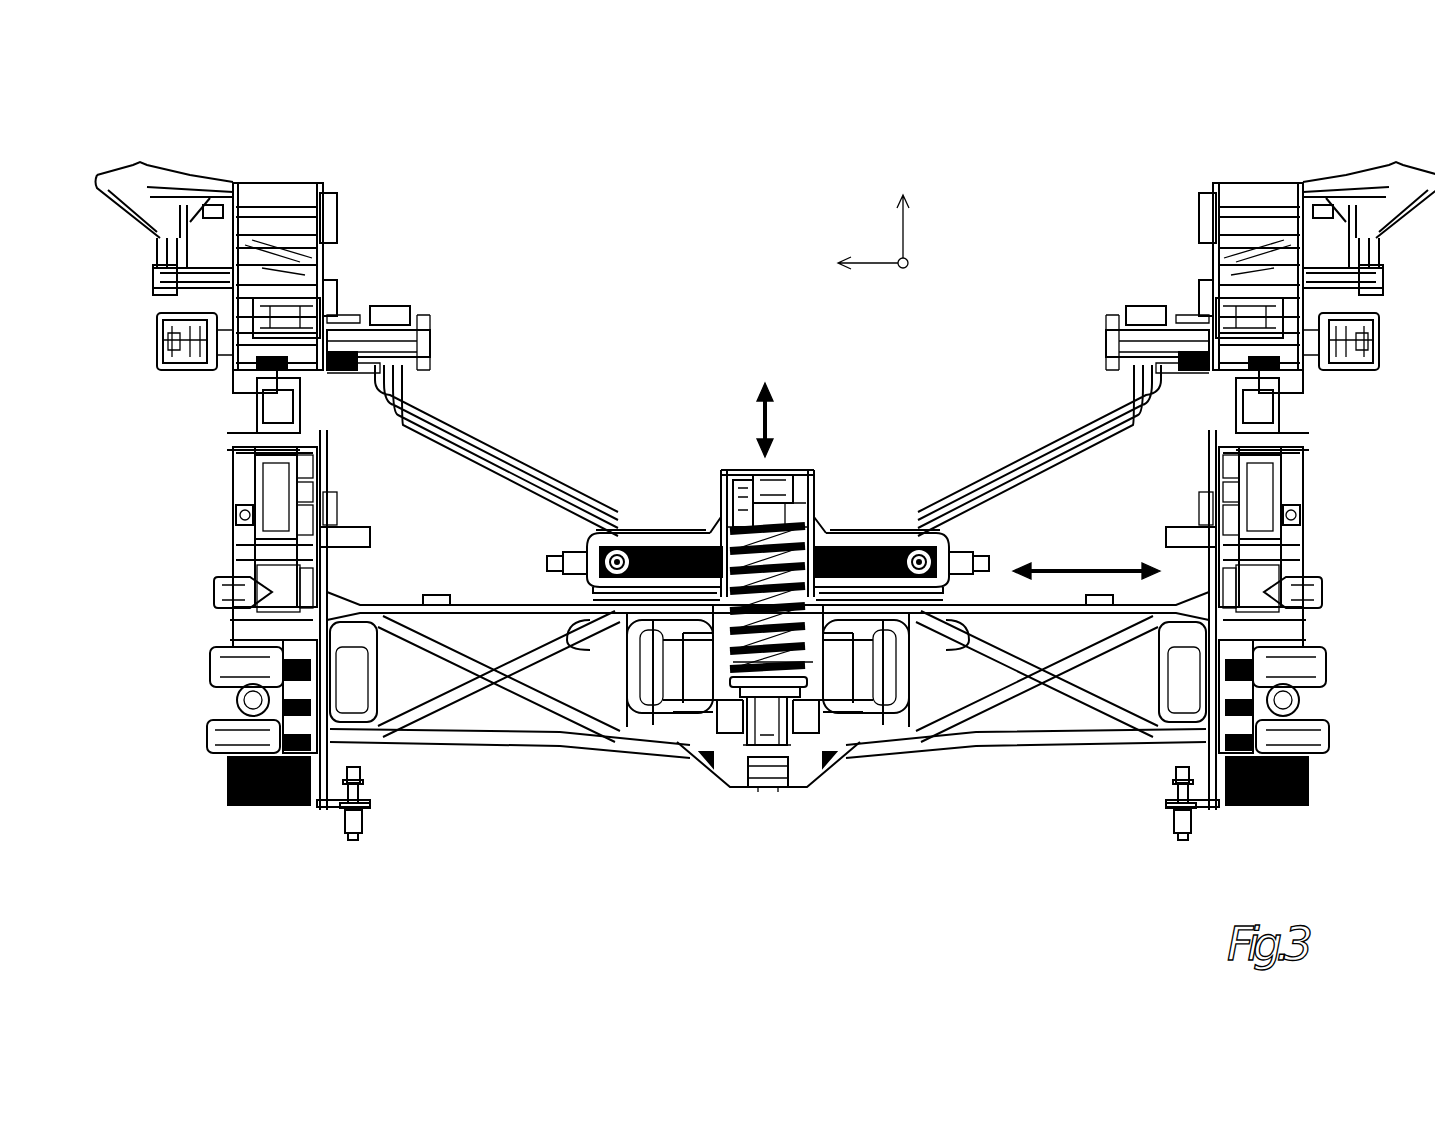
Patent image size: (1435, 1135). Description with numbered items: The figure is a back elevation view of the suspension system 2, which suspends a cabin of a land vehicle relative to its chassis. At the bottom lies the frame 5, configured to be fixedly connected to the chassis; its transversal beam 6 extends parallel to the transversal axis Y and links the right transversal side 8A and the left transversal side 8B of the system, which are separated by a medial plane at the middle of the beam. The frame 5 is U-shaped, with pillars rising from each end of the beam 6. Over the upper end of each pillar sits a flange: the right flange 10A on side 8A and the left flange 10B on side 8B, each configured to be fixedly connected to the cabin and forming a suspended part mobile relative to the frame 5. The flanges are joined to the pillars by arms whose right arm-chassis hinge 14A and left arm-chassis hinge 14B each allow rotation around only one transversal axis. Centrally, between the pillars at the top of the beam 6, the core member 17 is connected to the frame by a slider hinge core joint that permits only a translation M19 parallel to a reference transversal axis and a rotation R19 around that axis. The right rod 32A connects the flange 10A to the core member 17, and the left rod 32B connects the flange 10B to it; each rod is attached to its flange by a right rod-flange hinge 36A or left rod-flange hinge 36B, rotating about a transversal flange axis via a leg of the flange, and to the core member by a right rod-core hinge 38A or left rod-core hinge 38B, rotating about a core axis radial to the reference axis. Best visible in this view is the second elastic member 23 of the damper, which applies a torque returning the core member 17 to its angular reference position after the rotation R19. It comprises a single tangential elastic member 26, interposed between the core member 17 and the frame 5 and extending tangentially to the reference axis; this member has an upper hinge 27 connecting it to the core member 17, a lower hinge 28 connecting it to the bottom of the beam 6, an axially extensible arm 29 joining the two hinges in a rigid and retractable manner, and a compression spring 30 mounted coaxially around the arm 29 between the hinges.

The suspension system 2 is at (706, 388).
The frame 5 is at (473, 748).
The transversal beam 6 is at (460, 608).
The right transversal side 8A is at (1285, 635).
The left transversal side 8B is at (231, 635).
The right flange 10A is at (1250, 263).
The left flange 10B is at (270, 263).
The right arm-chassis hinge 14A is at (1347, 376).
The left arm-chassis hinge 14B is at (157, 347).
The core member 17 is at (657, 540).
The second elastic member 23 is at (805, 523).
The tangential elastic member 26 is at (768, 635).
The upper hinge 27 is at (762, 474).
The lower hinge 28 is at (767, 782).
The axially extensible arm 29 is at (733, 662).
The compression spring 30 is at (813, 662).
The right rod 32A is at (1055, 458).
The left rod 32B is at (468, 450).
The right rod-flange hinge 36A is at (1140, 305).
The left rod-flange hinge 36B is at (388, 306).
The right rod-core hinge 38A is at (920, 548).
The left rod-core hinge 38B is at (617, 548).
The rotation R19 is at (764, 403).
The translation M19 is at (1086, 556).